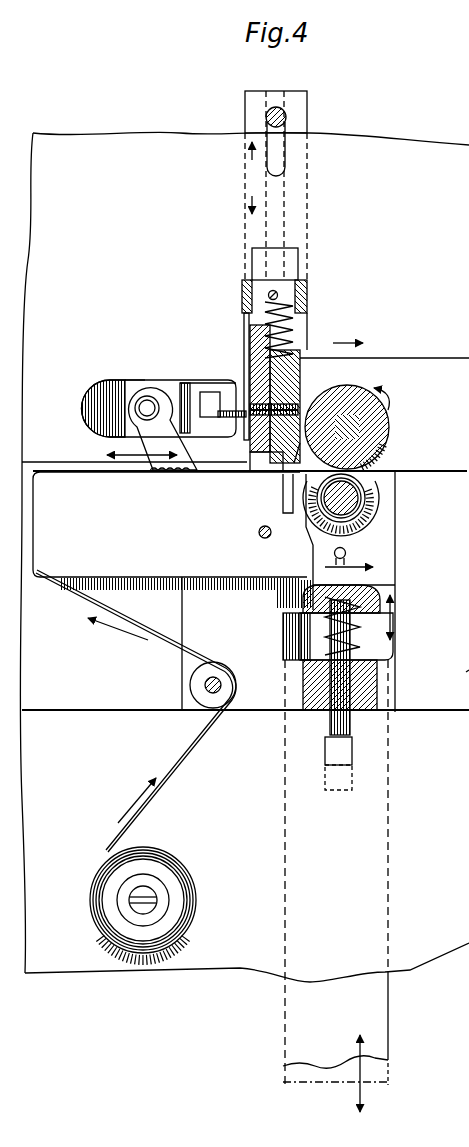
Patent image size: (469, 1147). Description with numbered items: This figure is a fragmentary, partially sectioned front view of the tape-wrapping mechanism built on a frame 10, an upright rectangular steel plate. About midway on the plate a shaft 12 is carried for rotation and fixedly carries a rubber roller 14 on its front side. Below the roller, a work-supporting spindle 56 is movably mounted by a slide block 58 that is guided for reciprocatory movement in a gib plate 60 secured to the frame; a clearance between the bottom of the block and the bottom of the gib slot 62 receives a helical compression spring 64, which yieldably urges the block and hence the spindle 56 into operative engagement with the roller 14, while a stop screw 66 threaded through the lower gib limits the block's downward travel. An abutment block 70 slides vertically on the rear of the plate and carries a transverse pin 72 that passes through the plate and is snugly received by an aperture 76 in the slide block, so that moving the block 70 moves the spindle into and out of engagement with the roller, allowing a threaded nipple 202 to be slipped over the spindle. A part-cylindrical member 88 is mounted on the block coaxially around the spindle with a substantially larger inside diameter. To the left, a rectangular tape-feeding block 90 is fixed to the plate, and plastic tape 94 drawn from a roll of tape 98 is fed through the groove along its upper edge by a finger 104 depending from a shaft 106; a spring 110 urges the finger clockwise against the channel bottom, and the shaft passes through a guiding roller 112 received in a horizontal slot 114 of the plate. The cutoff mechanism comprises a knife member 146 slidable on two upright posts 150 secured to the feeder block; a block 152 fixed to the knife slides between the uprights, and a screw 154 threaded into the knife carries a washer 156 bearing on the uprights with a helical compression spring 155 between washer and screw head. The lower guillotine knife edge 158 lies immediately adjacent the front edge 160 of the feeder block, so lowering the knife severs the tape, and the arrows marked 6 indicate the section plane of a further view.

The section line 6- 6 is at (357, 457).
The frame 10 is at (236, 971).
The shaft 12 is at (377, 418).
The rubber roller 14 is at (352, 397).
The work-supporting spindle 56 is at (350, 497).
The slide block 58 is at (390, 570).
The gib plate 60 is at (432, 710).
The gib slot 62 is at (287, 623).
The helical compression spring 64 is at (363, 638).
The stop screw 66 is at (333, 752).
The abutment block 70 is at (378, 1012).
The transverse pin 72 is at (348, 550).
The aperture 76 is at (330, 558).
The part-cylindrical member 88 is at (377, 512).
The tape-feeding block 90 is at (68, 560).
The plastic tape 94 is at (205, 474).
The roll of tape 98 is at (135, 947).
The finger 104 is at (133, 438).
The shaft 106 is at (146, 406).
The spring 110 is at (170, 393).
The guiding roller 112 is at (132, 383).
The horizontal slot 114 is at (83, 393).
The knife member 146 is at (293, 370).
The upright posts 150 is at (247, 444).
The block 152 is at (258, 455).
The screw 154 is at (205, 392).
The helical compression spring 155 is at (245, 396).
The washer 156 is at (245, 387).
The guillotine knife edge 158 is at (283, 483).
The front edge 160 is at (295, 503).
The nipple 202 is at (452, 665).